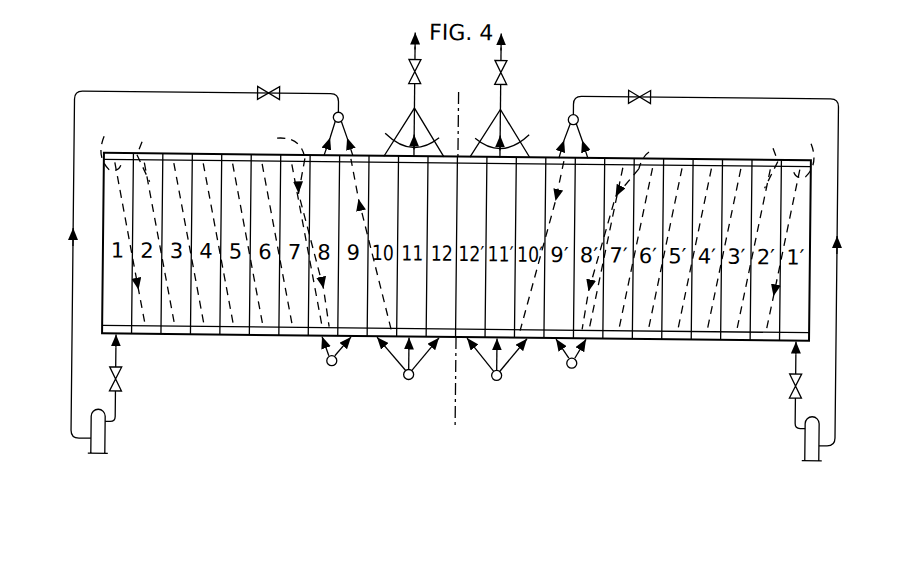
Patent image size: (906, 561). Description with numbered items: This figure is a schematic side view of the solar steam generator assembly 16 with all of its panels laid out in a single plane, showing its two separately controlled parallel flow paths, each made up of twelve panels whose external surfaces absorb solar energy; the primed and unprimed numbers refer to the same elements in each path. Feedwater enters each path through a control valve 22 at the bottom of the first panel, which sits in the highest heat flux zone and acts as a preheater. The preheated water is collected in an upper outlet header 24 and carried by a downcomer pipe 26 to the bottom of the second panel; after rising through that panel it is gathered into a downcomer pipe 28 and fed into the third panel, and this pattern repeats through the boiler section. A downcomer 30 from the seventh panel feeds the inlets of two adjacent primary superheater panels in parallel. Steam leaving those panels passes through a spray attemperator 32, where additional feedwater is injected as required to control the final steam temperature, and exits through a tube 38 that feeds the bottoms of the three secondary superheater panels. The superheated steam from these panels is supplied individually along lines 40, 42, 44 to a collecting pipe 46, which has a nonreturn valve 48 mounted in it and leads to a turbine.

The solar steam generator assembly 16 is at (716, 78).
The control valve 22 is at (123, 387).
The upper outlet header 24 is at (122, 156).
The downcomer pipe 26 is at (466, 145).
The downcomer pipe 28 is at (460, 153).
The downcomer 30 is at (618, 367).
The spray attemperator 32 is at (332, 117).
The tube 38 is at (407, 380).
The line 40 is at (406, 118).
The line 42 is at (418, 125).
The line 44 is at (459, 131).
The collecting pipe 46 is at (407, 90).
The nonreturn valve 48 is at (407, 60).